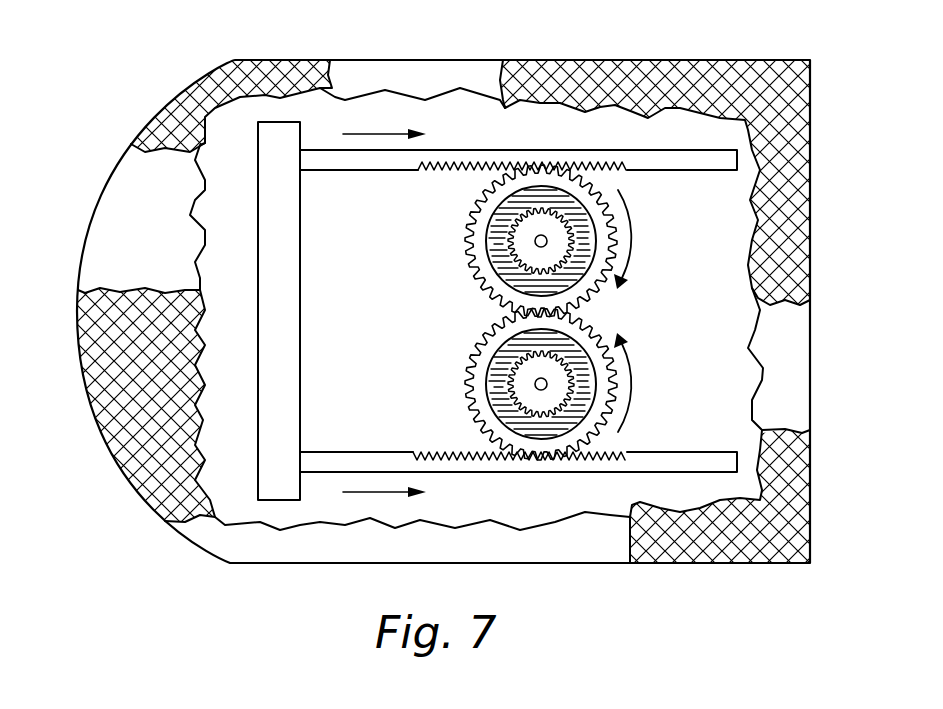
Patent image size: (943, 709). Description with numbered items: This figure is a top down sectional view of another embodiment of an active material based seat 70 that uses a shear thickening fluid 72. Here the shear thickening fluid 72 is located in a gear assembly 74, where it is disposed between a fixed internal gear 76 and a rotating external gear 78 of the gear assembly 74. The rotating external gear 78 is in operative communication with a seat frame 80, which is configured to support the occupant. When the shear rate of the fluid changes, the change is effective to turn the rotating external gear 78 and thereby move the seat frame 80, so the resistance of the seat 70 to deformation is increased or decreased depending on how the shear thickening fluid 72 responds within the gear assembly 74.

The active material based seat 70 is at (110, 96).
The shear thickening fluid 72 is at (497, 234).
The gear assembly 74 is at (660, 313).
The fixed internal gear 76 is at (533, 241).
The rotating external gear 78 is at (466, 385).
The seat frame 80 is at (300, 305).